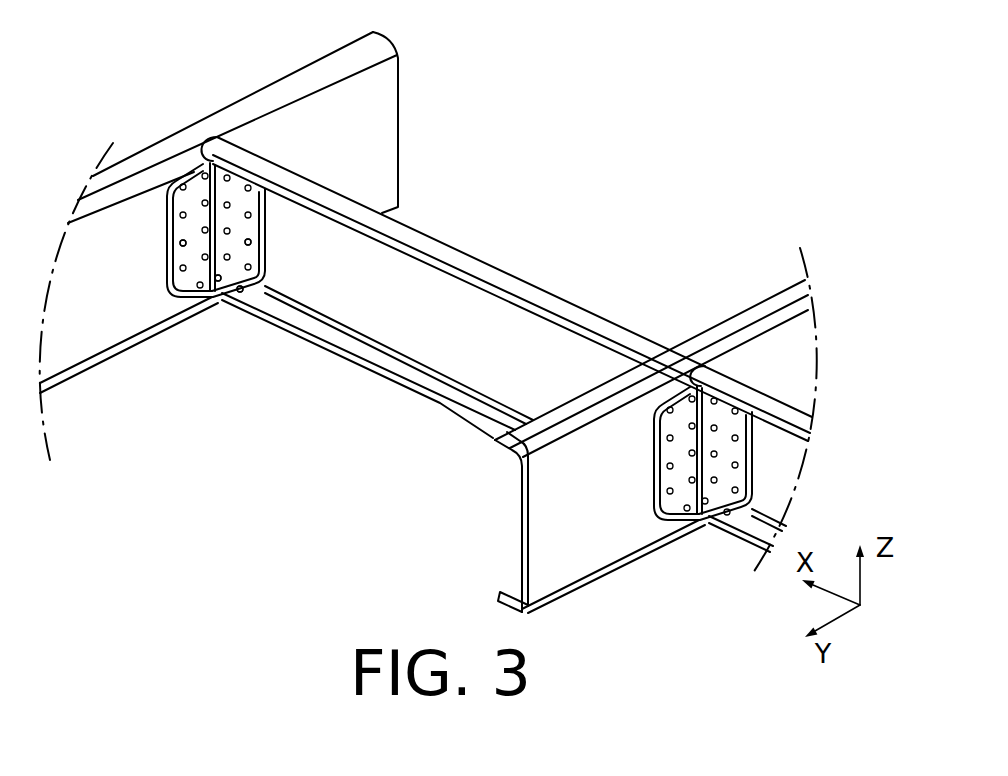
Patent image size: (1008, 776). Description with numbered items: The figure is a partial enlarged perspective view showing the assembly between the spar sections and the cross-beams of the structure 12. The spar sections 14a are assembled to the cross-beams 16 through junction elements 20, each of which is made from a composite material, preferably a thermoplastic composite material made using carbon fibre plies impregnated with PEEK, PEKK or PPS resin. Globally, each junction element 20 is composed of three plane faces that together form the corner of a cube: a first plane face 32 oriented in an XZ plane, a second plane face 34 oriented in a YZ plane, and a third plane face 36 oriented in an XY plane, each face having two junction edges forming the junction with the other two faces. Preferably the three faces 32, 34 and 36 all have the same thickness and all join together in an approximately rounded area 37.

The deck frame 12 is at (718, 102).
The spar section 14a is at (478, 318).
The cross-beam 16 is at (372, 143).
The junction element 20 is at (190, 264).
The first plane face 32 is at (257, 232).
The second plane face 34 is at (192, 228).
The third plane face 36 is at (232, 295).
The rounded area 37 is at (213, 303).